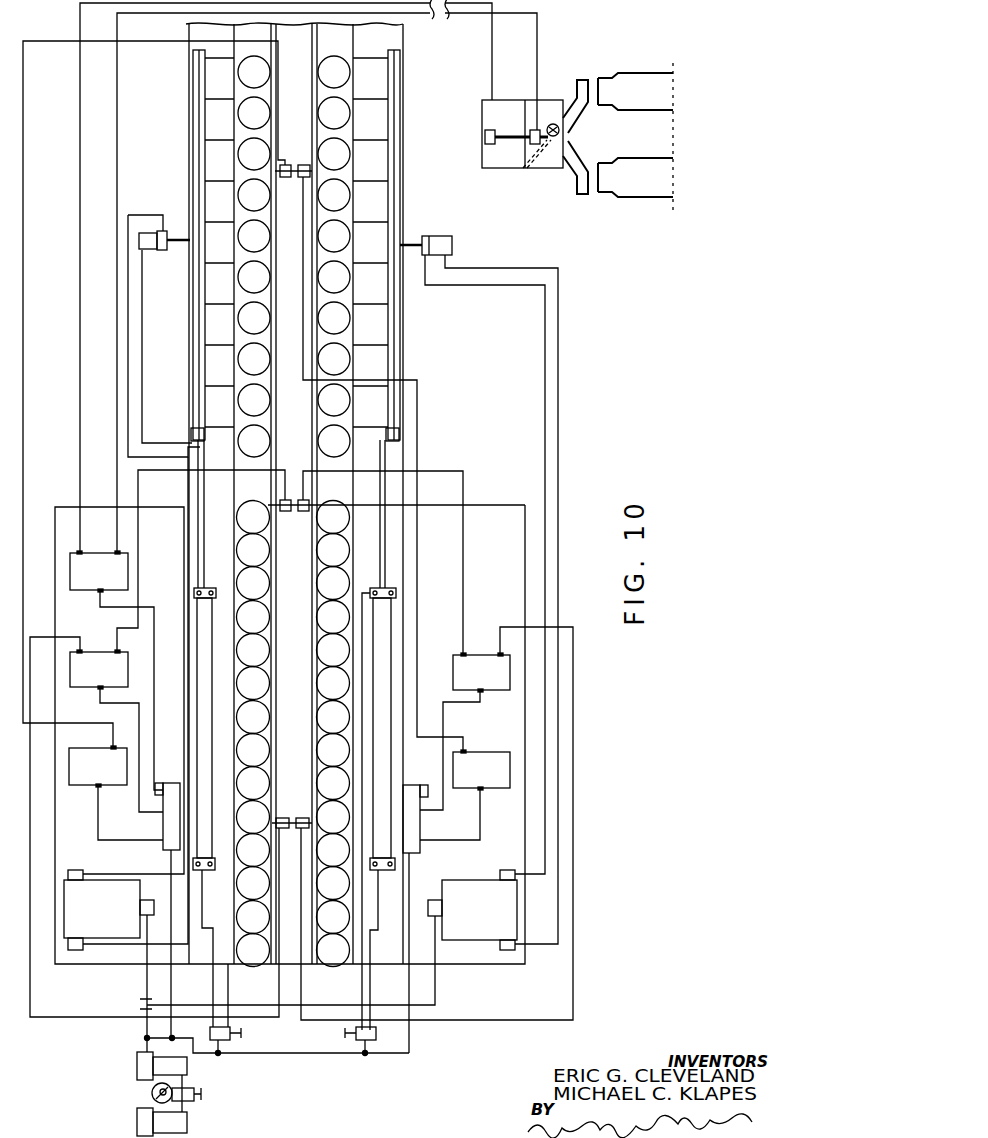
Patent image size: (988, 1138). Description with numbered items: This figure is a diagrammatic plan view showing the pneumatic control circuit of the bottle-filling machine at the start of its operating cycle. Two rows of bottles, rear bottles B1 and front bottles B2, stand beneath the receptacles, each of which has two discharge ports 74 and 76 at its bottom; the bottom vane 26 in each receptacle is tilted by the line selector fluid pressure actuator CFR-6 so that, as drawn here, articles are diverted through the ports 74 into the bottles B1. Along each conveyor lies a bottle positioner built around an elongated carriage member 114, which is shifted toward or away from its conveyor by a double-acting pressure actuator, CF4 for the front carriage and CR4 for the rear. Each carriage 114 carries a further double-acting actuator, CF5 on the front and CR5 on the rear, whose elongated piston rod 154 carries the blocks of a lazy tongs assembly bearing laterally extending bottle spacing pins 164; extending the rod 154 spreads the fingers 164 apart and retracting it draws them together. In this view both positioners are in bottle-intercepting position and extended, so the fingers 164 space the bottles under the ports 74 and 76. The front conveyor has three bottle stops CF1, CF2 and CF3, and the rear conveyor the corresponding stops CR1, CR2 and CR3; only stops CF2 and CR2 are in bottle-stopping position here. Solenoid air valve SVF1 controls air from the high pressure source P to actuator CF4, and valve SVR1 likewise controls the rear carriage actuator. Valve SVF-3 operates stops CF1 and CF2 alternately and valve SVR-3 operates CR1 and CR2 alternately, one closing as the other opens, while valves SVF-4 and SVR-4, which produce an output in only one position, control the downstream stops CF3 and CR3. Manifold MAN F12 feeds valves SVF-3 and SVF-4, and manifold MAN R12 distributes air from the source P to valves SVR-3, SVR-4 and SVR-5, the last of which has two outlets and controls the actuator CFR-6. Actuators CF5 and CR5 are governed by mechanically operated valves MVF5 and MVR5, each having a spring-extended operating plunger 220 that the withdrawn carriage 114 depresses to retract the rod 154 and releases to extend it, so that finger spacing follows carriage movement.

The elongated member (carriage) 114 is at (187, 214).
The bottle spacing pin 164 is at (228, 422).
The piston rod 154 is at (208, 488).
The rear carriage fluid pressure actuator CR5 is at (204, 807).
The front carriage fluid pressure actuator CF5 is at (379, 809).
The rear carriage pressure actuator CR4 is at (164, 336).
The rear downstream bottle stop CR3 is at (167, 394).
The front downstream bottle stop CF3 is at (380, 442).
The rear upstream bottle stop CR2 is at (321, 561).
The front upstream bottle stop CF2 is at (379, 563).
The rear upstream bottle stop CR1 is at (171, 827).
The front upstream bottle stop CF1 is at (433, 823).
The front carriage pressure actuator CF4 is at (479, 573).
The line selector fluid pressure actuator CFR-6 is at (522, 108).
The bottom vane 26 is at (549, 180).
The discharge port (rear) 74 is at (582, 77).
The discharge port (front) 76 is at (586, 193).
The rear conveyor bottle B1 is at (626, 73).
The front conveyor bottle B2 is at (633, 199).
The solenoid air valve SVR-5 is at (116, 670).
The solenoid air valve SVR-3 is at (116, 731).
The solenoid air valve SVR-4 is at (116, 793).
The rear air manifold MAN R12 is at (167, 910).
The solenoid air valve SVR1 is at (290, 754).
The solenoid air valve SVF-3 is at (465, 731).
The solenoid air valve SVF-4 is at (465, 795).
The front air manifold MAN F12 is at (415, 919).
The solenoid air valve SVF1 is at (332, 937).
The mechanically operated air valve MVR5 is at (224, 1043).
The mechanically operated air valve MVF5 is at (374, 1044).
The operating plunger 220 is at (236, 1035).
The high pressure source P is at (137, 1054).